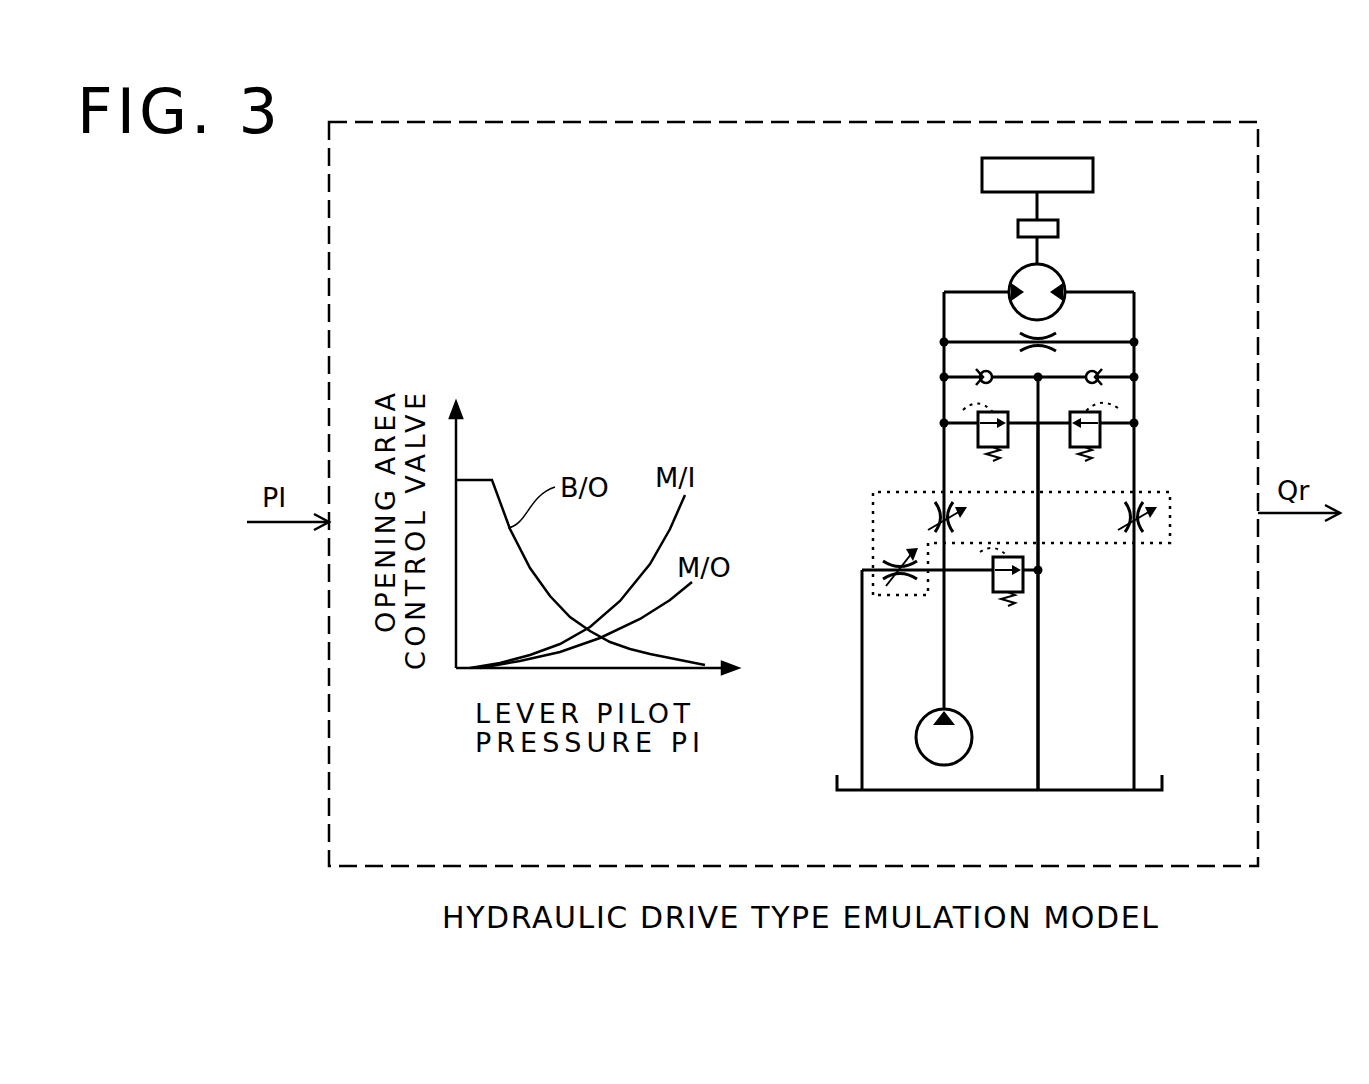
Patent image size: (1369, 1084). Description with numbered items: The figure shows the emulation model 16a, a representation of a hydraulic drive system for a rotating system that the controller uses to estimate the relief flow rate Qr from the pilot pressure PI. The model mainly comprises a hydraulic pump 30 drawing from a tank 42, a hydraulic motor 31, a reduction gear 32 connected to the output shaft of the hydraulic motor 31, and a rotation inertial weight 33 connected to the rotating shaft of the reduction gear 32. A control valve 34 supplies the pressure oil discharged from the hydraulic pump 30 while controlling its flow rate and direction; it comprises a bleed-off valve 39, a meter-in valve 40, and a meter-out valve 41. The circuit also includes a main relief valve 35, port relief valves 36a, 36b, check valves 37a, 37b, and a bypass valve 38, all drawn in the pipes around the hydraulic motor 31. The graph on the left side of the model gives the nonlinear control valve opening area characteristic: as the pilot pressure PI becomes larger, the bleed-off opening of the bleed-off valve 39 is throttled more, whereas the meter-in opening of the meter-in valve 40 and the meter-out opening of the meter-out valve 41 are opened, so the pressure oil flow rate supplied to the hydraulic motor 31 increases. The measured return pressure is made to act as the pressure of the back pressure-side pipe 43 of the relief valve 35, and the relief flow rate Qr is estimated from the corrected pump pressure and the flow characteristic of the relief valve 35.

The emulation model 16a is at (329, 268).
The hydraulic pump 30 is at (917, 740).
The hydraulic motor 31 is at (1062, 278).
The reduction gear 32 is at (1018, 228).
The rotation inertial weight 33 is at (1093, 176).
The control valve 34 is at (873, 490).
The main relief valve 35 is at (1012, 605).
The port relief valve 36a is at (963, 410).
The port relief valve 36b is at (1118, 407).
The check valve 37a is at (975, 376).
The check valve 37b is at (1100, 376).
The bypass valve 38 is at (1062, 332).
The bleed-off valve 39 is at (900, 597).
The meter-in valve 40 is at (937, 510).
The meter-out valve 41 is at (1142, 510).
The tank 42 is at (1090, 791).
The back pressure-side pipe 43 is at (1040, 617).